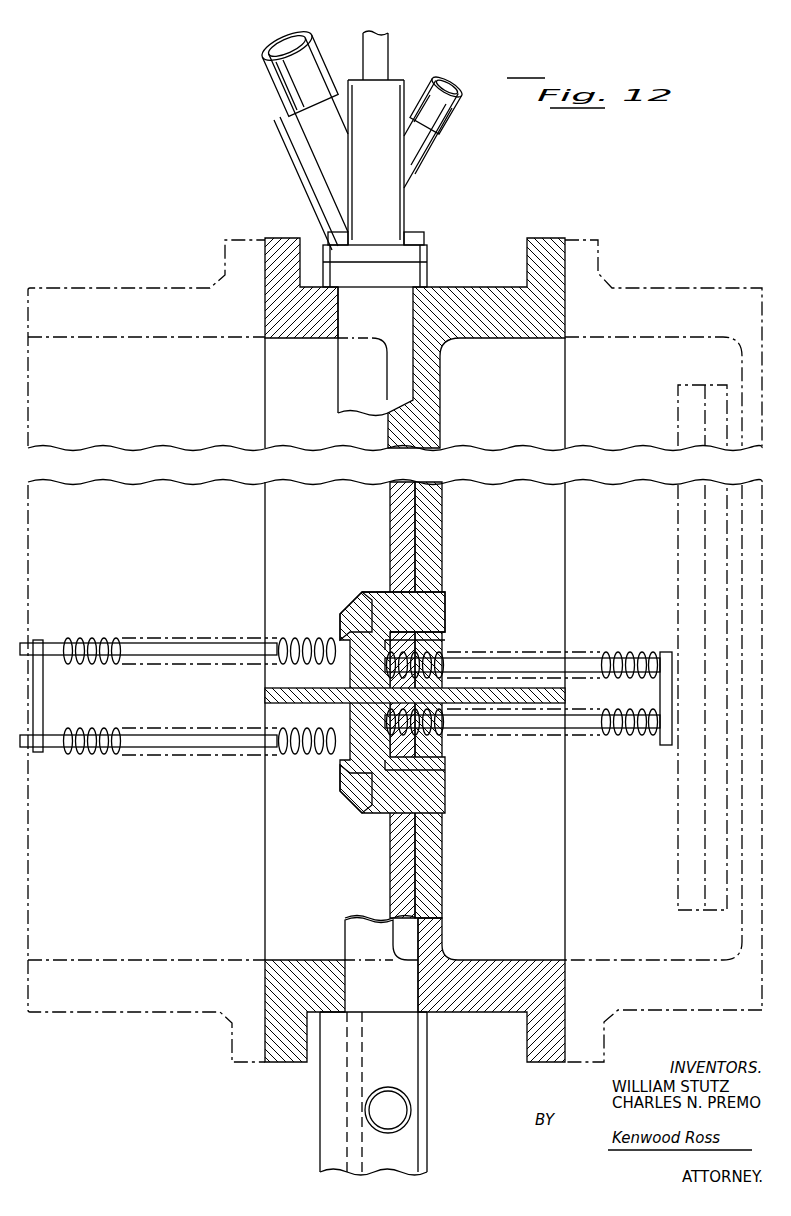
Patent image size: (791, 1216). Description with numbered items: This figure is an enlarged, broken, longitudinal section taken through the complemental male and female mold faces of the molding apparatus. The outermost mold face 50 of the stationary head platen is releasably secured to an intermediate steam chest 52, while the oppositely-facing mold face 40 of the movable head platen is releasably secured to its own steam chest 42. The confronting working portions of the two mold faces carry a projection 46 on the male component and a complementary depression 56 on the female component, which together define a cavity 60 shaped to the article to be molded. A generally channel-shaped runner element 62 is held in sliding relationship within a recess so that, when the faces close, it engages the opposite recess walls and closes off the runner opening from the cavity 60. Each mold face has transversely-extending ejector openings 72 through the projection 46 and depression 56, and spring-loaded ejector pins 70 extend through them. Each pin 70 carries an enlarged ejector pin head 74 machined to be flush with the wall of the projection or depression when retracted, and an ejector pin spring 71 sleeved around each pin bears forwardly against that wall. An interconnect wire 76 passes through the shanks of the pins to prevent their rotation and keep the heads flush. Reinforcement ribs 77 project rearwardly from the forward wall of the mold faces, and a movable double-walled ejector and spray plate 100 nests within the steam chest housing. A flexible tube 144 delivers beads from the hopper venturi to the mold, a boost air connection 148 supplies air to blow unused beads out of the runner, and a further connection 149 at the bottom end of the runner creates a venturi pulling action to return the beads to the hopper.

The mold face 40 is at (545, 238).
The steam chest 42 is at (683, 288).
The projection 46 is at (392, 655).
The mold face 50 is at (284, 238).
The steam chest 52 is at (132, 288).
The depression 56 is at (346, 781).
The cavity 60 is at (384, 610).
The runner element 62 is at (392, 196).
The ejector pin 70 is at (200, 643).
The ejector pin spring 71 is at (88, 638).
The ejector opening 72 is at (346, 632).
The ejector pin head 74 is at (402, 740).
The interconnect wire 76 is at (43, 694).
The reinforcement rib 77 is at (265, 696).
The ejector and spray plate 100 is at (678, 414).
The flexible tube 144 is at (263, 93).
The boost air connection 148 is at (440, 118).
The connection 149 is at (405, 1114).